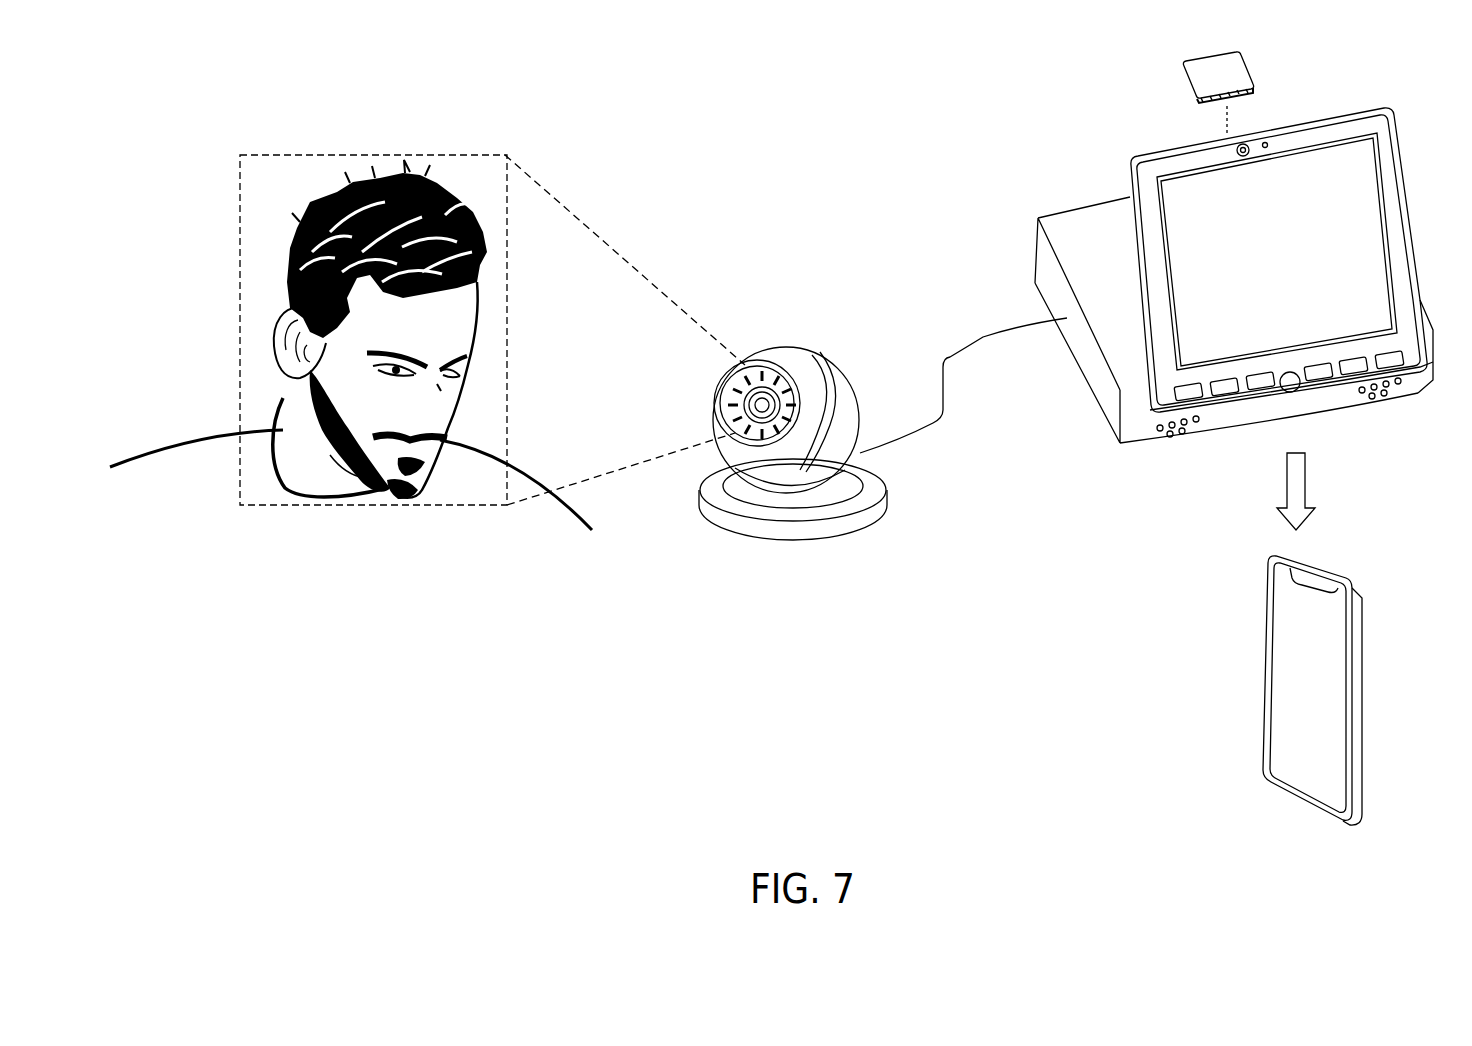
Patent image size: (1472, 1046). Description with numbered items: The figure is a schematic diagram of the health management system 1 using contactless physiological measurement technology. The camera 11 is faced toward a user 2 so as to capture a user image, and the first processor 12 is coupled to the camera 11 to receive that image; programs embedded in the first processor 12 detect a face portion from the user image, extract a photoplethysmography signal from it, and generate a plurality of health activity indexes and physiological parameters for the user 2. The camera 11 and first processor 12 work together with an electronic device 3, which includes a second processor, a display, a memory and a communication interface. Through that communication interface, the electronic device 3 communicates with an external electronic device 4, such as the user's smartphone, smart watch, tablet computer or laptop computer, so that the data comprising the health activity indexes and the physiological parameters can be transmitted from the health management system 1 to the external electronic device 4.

The health management system 1 is at (886, 181).
The user 2 is at (506, 150).
The electronic device 3 is at (1396, 106).
The external electronic device 4 is at (1358, 572).
The camera 11 is at (807, 354).
The first processor 12 is at (1253, 51).